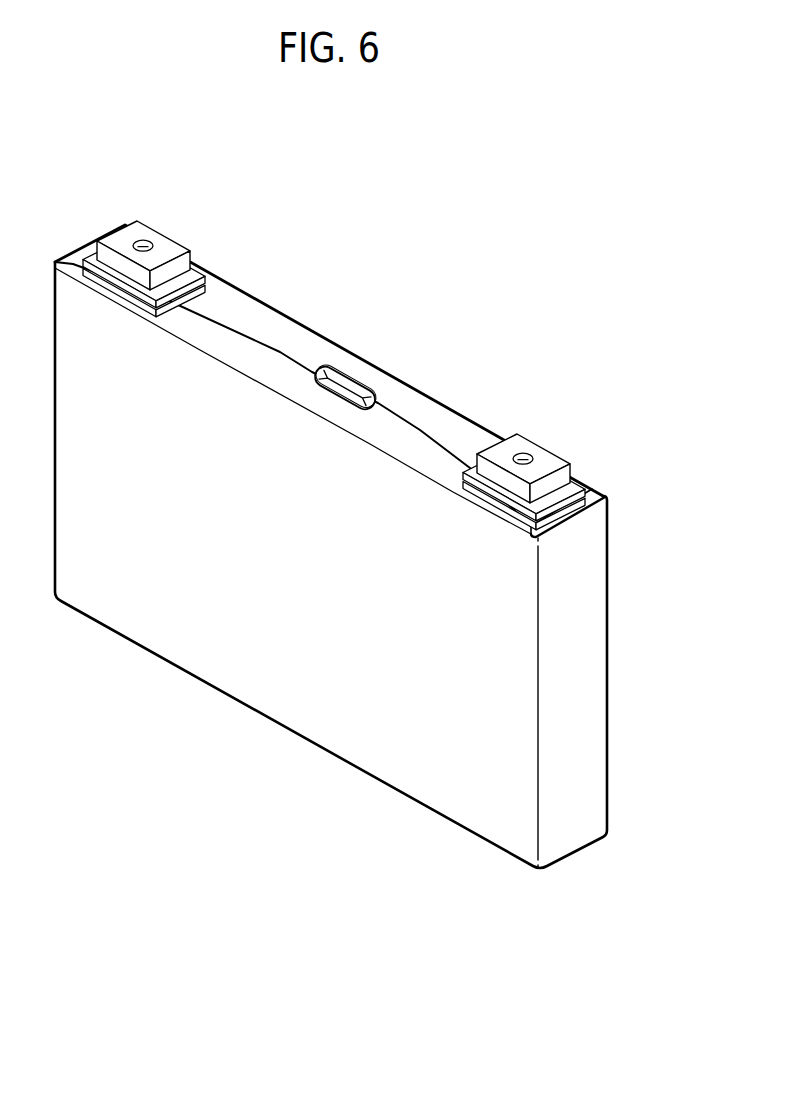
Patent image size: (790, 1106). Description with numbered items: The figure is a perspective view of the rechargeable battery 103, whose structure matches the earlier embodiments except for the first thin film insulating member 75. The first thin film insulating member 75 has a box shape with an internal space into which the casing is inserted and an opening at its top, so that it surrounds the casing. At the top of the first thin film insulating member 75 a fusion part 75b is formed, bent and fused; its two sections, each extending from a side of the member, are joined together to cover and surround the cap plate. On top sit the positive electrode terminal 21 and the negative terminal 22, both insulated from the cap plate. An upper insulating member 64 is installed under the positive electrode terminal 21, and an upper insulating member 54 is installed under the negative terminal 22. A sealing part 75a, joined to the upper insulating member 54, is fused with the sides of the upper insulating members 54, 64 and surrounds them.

The rechargeable battery 103 is at (378, 182).
The positive electrode terminal 21 is at (520, 447).
The negative terminal 22 is at (143, 232).
The upper insulating member 54 is at (190, 262).
The upper insulating member 64 is at (570, 472).
The first thin film insulating member 75 is at (287, 700).
The sealing part 75a is at (590, 486).
The fusion part 75b is at (315, 347).